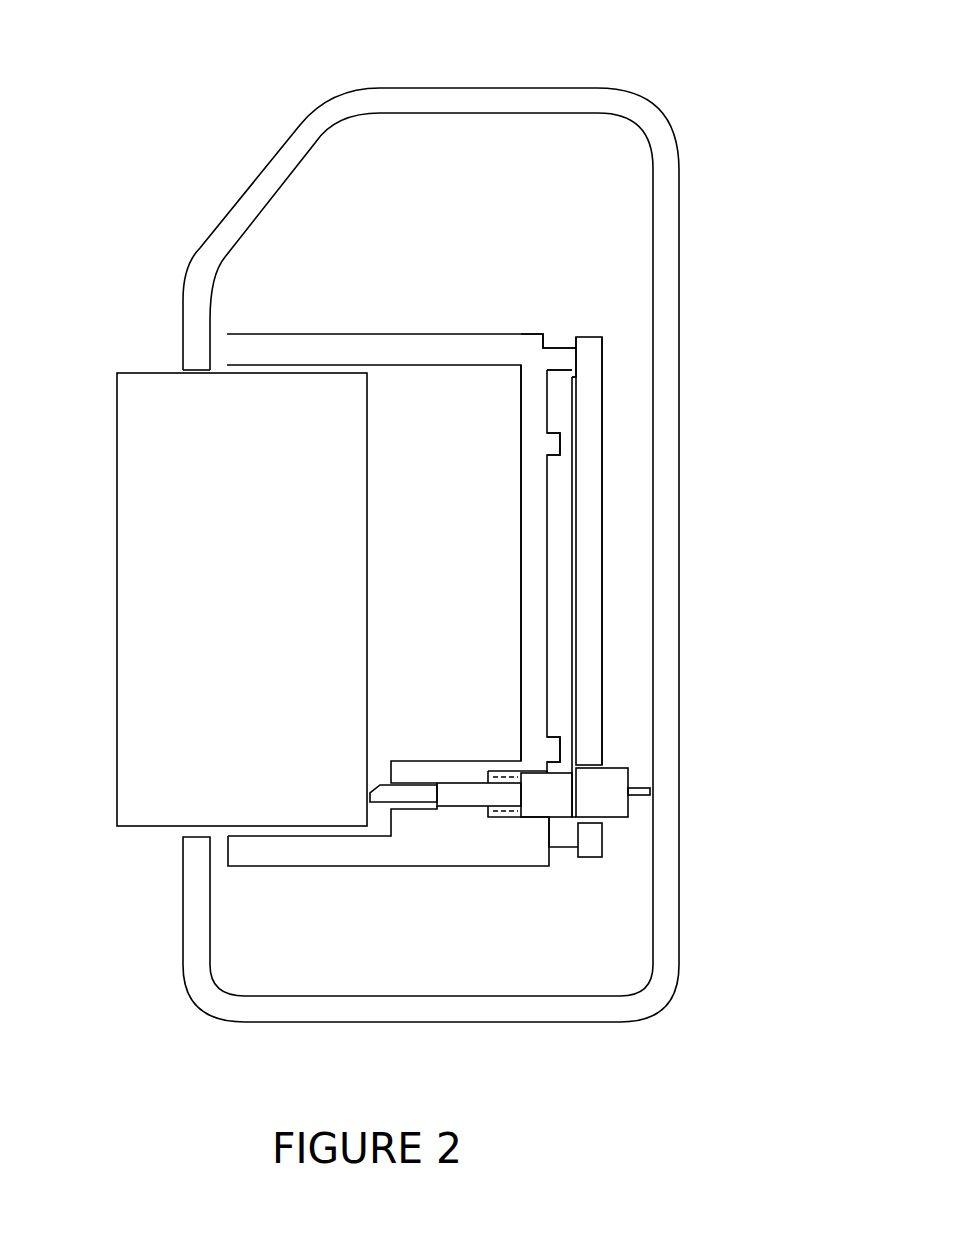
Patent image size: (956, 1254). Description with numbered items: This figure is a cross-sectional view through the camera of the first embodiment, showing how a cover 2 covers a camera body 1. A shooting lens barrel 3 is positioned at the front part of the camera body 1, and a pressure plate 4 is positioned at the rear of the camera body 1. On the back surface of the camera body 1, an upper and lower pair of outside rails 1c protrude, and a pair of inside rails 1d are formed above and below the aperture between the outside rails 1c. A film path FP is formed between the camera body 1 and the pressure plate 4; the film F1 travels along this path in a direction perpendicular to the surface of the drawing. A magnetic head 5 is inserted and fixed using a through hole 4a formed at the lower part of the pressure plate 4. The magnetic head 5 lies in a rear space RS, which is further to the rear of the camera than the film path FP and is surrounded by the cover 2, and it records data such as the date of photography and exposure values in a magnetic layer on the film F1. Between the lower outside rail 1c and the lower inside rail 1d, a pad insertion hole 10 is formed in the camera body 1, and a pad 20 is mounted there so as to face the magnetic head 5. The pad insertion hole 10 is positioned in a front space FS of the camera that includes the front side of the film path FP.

The camera body 1 is at (375, 334).
The outside rail 1c is at (558, 350).
The inside rail 1d is at (553, 445).
The cover 2 is at (515, 87).
The shooting lens barrel 3 is at (117, 440).
The pressure plate 4 is at (656, 603).
The through hole 4a is at (590, 818).
The magnetic head 5 is at (617, 778).
The pad insertion hole 10 is at (496, 822).
The pad 20 is at (558, 823).
The film path FP is at (560, 407).
The film F1 is at (573, 532).
The front space FS is at (463, 651).
The rear space RS is at (648, 651).